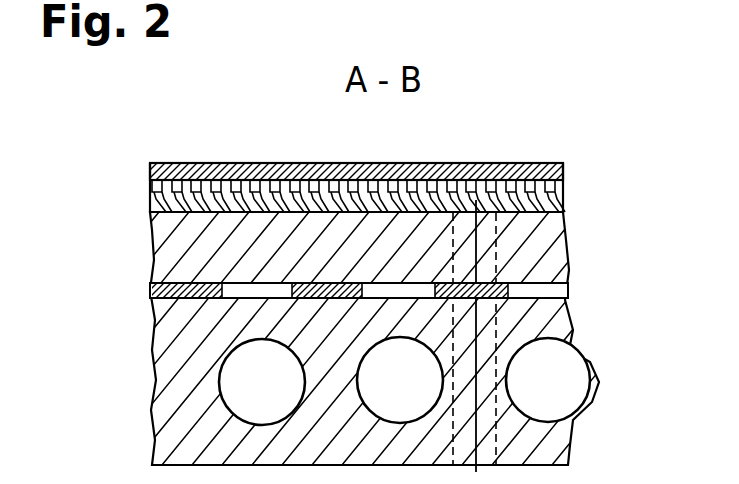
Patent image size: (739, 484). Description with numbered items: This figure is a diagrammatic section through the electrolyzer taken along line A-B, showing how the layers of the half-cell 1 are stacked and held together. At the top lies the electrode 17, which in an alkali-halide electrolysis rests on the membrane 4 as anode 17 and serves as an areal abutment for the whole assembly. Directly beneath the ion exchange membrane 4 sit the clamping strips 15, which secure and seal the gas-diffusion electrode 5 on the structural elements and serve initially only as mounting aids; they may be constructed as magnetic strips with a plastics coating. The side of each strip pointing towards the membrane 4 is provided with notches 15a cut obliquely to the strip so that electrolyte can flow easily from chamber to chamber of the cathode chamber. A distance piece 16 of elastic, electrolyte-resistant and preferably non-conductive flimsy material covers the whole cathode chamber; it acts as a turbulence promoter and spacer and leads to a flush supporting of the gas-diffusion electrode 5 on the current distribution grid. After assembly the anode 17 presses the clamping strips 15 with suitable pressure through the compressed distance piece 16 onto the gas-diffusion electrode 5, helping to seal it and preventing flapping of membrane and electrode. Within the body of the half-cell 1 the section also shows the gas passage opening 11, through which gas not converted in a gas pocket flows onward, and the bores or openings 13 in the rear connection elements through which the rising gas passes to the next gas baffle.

The half-cell 1 is at (553, 463).
The ion exchange membrane 4 is at (148, 176).
The gas-diffusion electrode 5 is at (197, 210).
The gas passage opening 11 is at (413, 290).
The bores or openings 13 is at (590, 378).
The clamping strips 15 is at (553, 203).
The notches 15a is at (560, 181).
The distance piece 16 is at (148, 181).
The electrode (anode) 17 is at (168, 163).